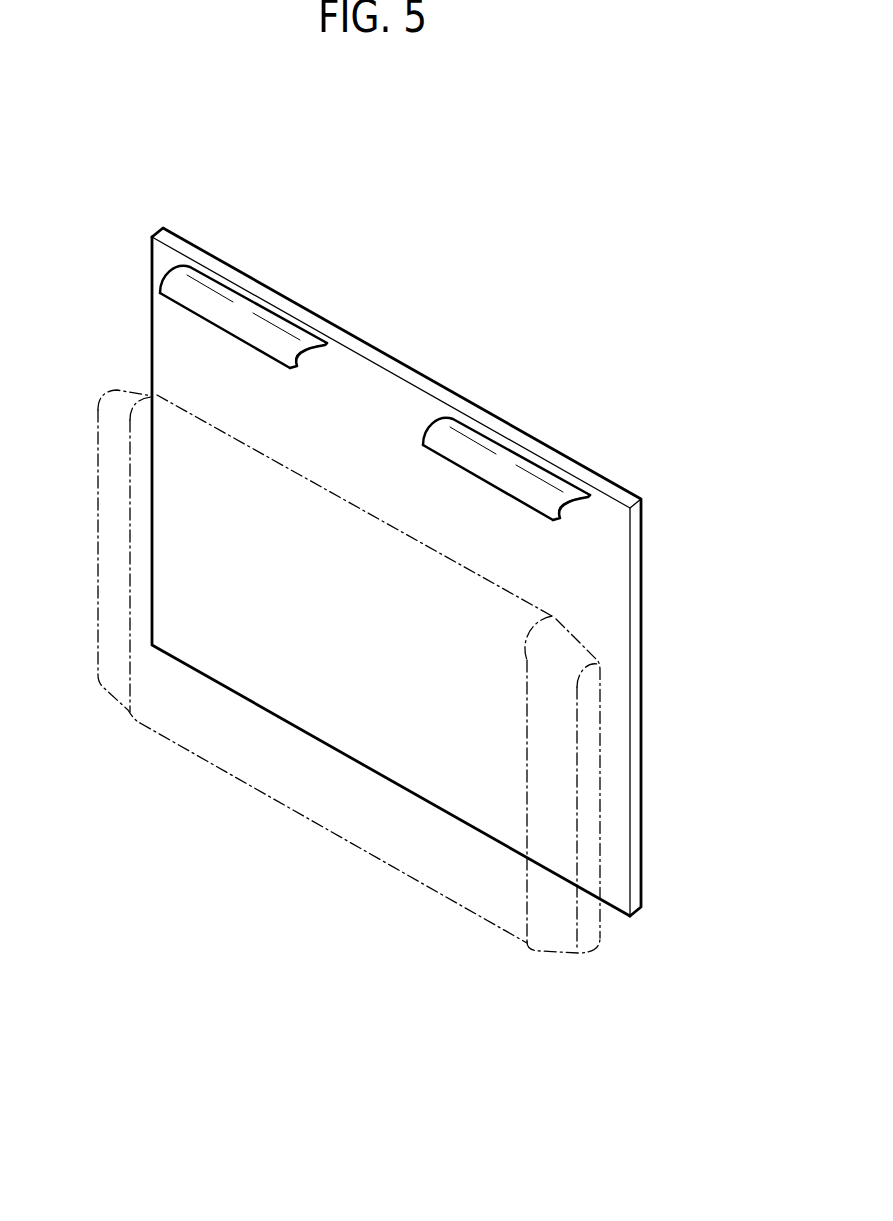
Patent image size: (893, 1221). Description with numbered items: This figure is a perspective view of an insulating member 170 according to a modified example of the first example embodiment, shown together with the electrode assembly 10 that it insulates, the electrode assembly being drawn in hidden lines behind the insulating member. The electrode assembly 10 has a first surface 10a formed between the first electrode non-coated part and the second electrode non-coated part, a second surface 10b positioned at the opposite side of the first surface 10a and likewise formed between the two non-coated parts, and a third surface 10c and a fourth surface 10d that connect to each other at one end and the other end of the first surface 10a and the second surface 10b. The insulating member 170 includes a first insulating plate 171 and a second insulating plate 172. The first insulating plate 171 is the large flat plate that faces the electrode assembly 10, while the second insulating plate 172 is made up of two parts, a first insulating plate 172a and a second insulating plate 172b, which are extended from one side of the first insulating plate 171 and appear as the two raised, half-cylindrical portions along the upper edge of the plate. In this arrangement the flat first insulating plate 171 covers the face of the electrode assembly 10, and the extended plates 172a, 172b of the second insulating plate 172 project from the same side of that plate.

The electrode assembly 10 is at (325, 683).
The first surface 10a is at (223, 707).
The second surface 10b is at (383, 827).
The third surface 10c is at (203, 437).
The fourth surface 10d is at (540, 950).
The insulating member 170 is at (449, 551).
The first insulating plate 171 is at (588, 570).
The second insulating plate 172 is at (385, 393).
The first insulating plate 172a is at (300, 332).
The second insulating plate 172b is at (512, 460).